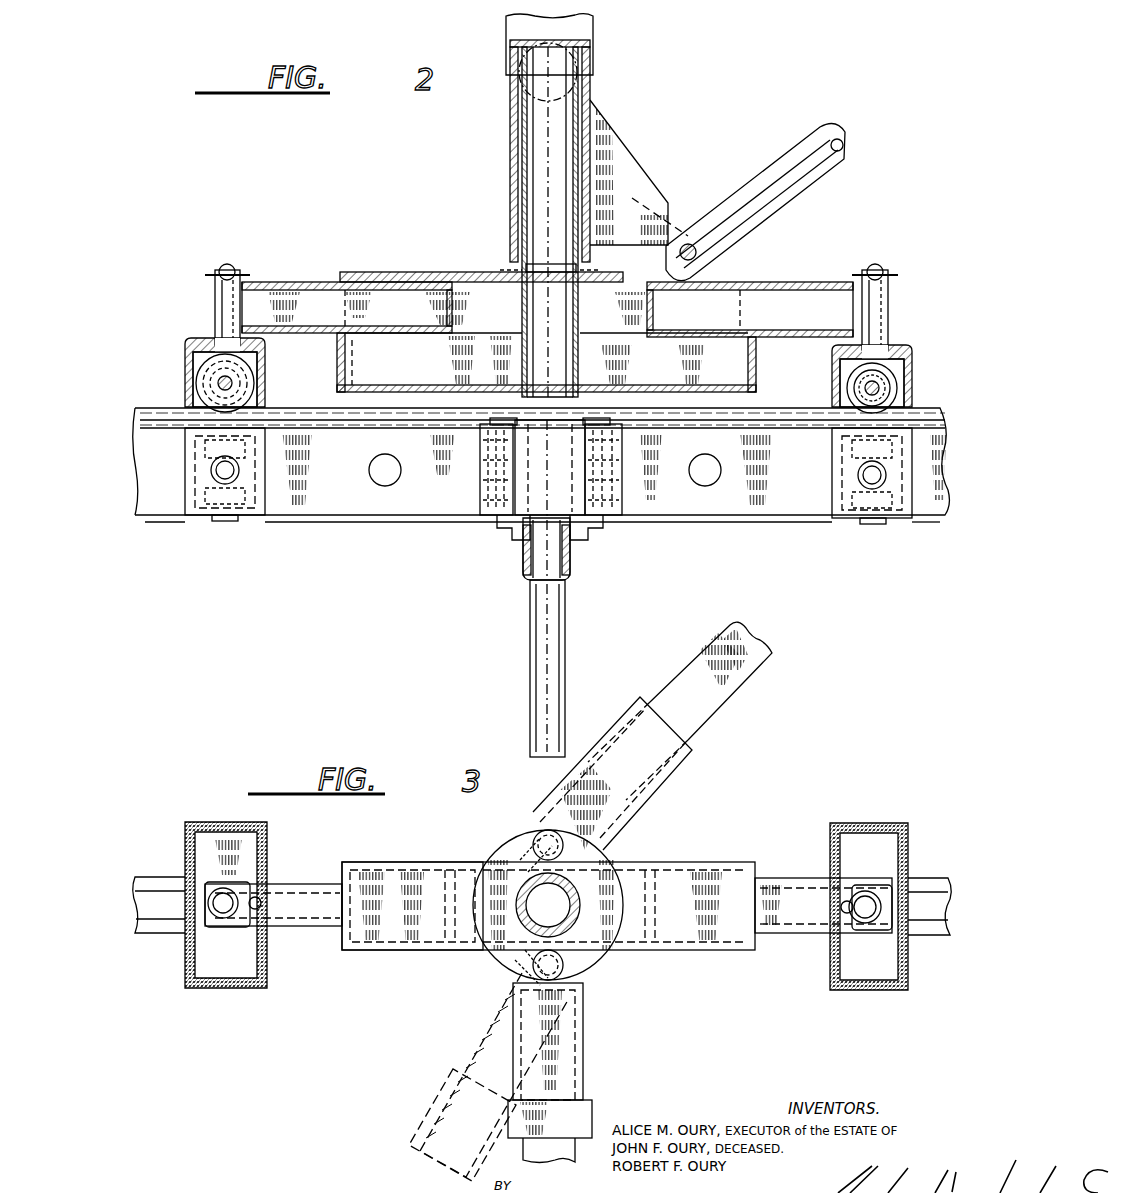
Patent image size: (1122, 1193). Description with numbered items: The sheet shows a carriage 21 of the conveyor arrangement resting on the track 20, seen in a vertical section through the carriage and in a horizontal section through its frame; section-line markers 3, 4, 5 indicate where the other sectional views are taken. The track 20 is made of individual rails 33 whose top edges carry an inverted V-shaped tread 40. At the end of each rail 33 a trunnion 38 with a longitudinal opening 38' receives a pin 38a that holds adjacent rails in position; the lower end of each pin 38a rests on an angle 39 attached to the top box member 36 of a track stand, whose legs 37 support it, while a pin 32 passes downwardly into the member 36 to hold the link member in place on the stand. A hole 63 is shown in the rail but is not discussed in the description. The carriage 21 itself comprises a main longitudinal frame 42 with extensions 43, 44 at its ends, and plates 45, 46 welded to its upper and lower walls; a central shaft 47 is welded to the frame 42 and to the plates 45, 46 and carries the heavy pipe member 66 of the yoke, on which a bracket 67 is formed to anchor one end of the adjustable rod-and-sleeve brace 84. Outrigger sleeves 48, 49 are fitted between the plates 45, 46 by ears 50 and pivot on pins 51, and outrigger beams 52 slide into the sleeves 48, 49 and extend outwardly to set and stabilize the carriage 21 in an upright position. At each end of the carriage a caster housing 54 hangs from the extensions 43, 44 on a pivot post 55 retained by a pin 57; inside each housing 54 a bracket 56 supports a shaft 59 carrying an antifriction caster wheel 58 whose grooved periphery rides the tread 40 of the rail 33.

In FIG. 2, the track 20 is at (352, 600).
In FIG. 2, the carriage 21 is at (422, 252).
In FIG. 2, the pin 32 is at (566, 572).
In FIG. 2, the rail 33 is at (412, 515).
In FIG. 2, the top box member 36 is at (526, 580).
In FIG. 2, the legs 37 is at (540, 638).
In FIG. 2, the trunnion 38 is at (564, 469).
In FIG. 2, the longitudinal opening 38' is at (564, 470).
In FIG. 2, the pin 38a is at (495, 526).
In FIG. 2, the angle 39 is at (522, 540).
In FIG. 2, the inverted V-shaped tread 40 is at (652, 425).
In FIG. 2, the main longitudinal frame 42 is at (546, 362).
In FIG. 3, the main longitudinal frame 42 is at (386, 950).
In FIG. 3, the extension 43 is at (318, 900).
In FIG. 2, the extension 44 is at (805, 288).
In FIG. 3, the extension 44 is at (812, 888).
In FIG. 2, the plate 45 is at (608, 280).
In FIG. 3, the plate 45 is at (612, 850).
In FIG. 2, the plate 46 is at (578, 398).
In FIG. 2, the central shaft 47 is at (520, 160).
In FIG. 3, the central shaft 47 is at (528, 880).
In FIG. 3, the outrigger sleeve 48 is at (648, 780).
In FIG. 3, the outrigger sleeve 49 is at (565, 1040).
In FIG. 3, the ears 50 is at (540, 848).
In FIG. 2, the pins 51 is at (512, 270).
In FIG. 3, the pins 51 is at (530, 842).
In FIG. 3, the outrigger beam 52 is at (708, 718).
In FIG. 2, the caster housing 54 is at (188, 354).
In FIG. 3, the caster housing 54 is at (188, 968).
In FIG. 2, the pivot post 55 is at (228, 316).
In FIG. 3, the pivot post 55 is at (228, 918).
In FIG. 2, the bracket 56 is at (205, 376).
In FIG. 2, the pin 57 is at (245, 274).
In FIG. 3, the pin 57 is at (275, 895).
In FIG. 2, the antifriction caster wheel 58 is at (240, 376).
In FIG. 2, the shaft 59 is at (240, 386).
In FIG. 2, the hole 63 is at (385, 478).
In FIG. 2, the pipe member 66 is at (515, 222).
In FIG. 2, the bracket 67 is at (622, 178).
In FIG. 2, the brace 84 is at (792, 168).
In FIG. 2, the section line 3- 3 is at (197, 278).
In FIG. 2, the section line 4- 4 is at (575, 23).
In FIG. 2, the section line 5- 5 is at (265, 207).